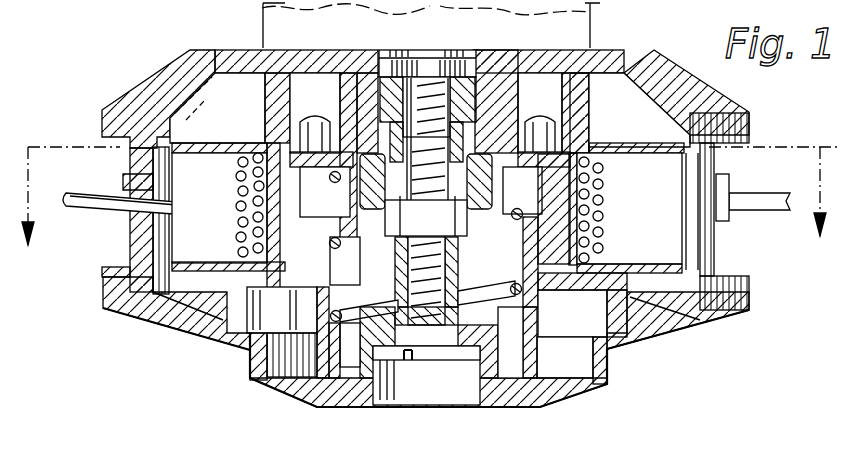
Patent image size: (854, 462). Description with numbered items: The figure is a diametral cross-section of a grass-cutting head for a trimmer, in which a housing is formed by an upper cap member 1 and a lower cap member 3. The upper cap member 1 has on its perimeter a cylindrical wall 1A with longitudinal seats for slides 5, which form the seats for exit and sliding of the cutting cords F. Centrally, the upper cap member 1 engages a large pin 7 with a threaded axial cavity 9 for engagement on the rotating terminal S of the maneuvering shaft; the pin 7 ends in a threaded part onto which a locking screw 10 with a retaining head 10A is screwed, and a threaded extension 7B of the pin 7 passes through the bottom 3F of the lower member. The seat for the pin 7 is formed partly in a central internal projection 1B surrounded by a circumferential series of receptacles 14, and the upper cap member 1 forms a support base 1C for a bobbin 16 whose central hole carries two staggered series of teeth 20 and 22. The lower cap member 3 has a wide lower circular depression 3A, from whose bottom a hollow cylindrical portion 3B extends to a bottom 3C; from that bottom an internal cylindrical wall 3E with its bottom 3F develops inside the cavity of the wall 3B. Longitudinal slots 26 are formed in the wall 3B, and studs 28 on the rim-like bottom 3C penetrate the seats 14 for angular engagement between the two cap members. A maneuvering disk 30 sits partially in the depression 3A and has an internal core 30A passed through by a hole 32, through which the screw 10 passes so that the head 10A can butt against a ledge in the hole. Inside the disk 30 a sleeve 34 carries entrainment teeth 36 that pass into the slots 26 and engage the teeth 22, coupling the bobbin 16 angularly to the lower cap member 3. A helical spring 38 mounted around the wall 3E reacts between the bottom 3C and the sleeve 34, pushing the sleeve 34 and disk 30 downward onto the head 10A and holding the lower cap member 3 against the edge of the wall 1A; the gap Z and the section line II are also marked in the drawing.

The upper cap member 1 is at (143, 71).
The cylindrical wall 1A is at (722, 166).
The central internal projection 1B is at (520, 230).
The support base 1C is at (628, 68).
The lower cap member 3 is at (157, 332).
The lower circular depression 3A is at (605, 316).
The hollow cylindrical portion 3B is at (602, 190).
The bottom 3C is at (582, 128).
The internal cylindrical wall 3E is at (325, 208).
The bottom 3F is at (394, 281).
The slides 5 is at (128, 248).
The pin 7 is at (462, 63).
The threaded extension 7B is at (512, 289).
The threaded axial cavity 9 is at (425, 90).
The locking screw 10 is at (514, 408).
The retaining head 10A is at (388, 406).
The receptacles 14 is at (305, 116).
The bobbin 16 is at (740, 114).
The teeth 20 is at (265, 137).
The teeth 22 is at (614, 246).
The longitudinal slots 26 is at (240, 185).
The studs 28 is at (310, 118).
The maneuvering disk 30 is at (572, 405).
The internal core 30A is at (348, 376).
The hole 32 is at (448, 392).
The sleeve 34 is at (605, 392).
The entrainment teeth 36 is at (250, 246).
The helical spring 38 is at (537, 360).
The cords F is at (99, 192).
The rotating terminal S is at (251, 24).
The gap Z is at (426, 222).
The section line II- II is at (830, 242).